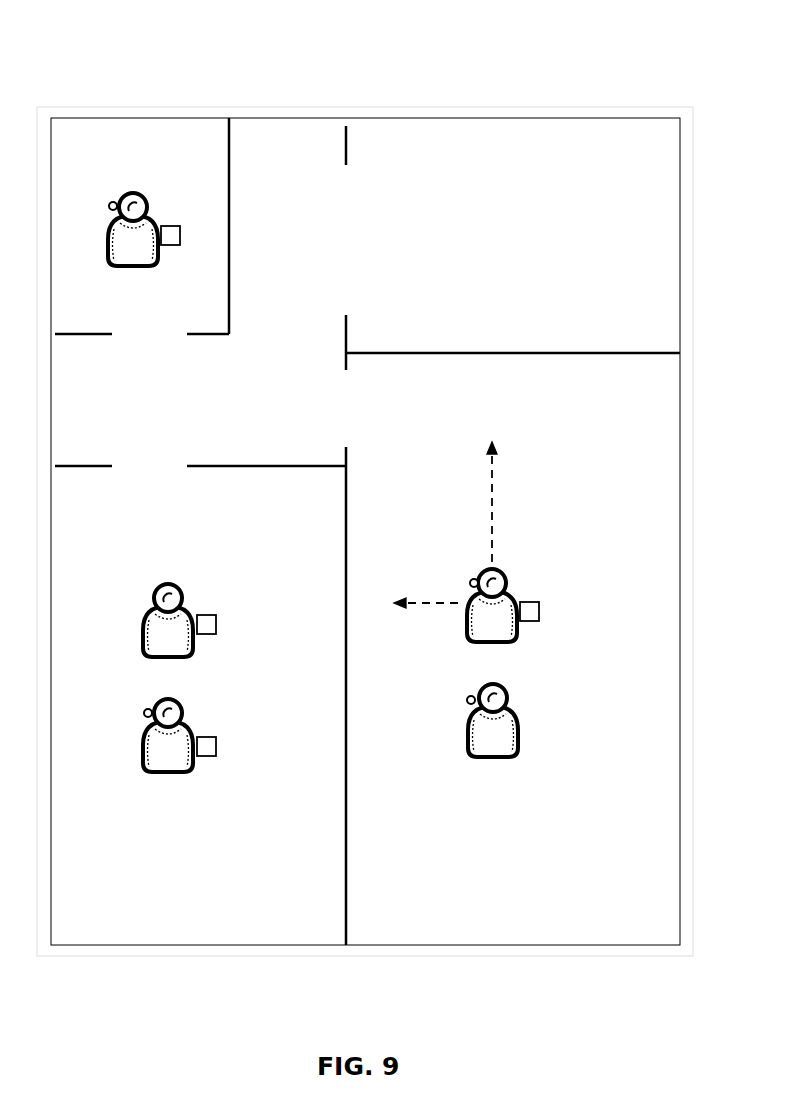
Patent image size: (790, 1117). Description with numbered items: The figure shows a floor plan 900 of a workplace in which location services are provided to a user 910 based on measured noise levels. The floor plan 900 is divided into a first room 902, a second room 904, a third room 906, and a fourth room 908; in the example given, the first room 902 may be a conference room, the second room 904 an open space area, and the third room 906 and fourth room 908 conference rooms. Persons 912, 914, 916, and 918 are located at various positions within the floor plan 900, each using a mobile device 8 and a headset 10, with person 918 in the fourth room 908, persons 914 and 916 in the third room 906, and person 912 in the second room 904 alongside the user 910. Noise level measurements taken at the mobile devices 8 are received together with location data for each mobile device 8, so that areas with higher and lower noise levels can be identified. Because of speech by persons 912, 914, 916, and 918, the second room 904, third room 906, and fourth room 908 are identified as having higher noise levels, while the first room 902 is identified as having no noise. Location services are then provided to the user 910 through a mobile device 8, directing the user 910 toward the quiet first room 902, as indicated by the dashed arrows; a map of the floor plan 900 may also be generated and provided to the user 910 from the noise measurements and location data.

The floor plan 900 is at (372, 37).
The first room 902 is at (513, 248).
The second room 904 is at (512, 696).
The third room 906 is at (200, 481).
The fourth room 908 is at (142, 226).
The user 910 is at (502, 573).
The person 912 is at (468, 743).
The person 914 is at (145, 755).
The person 916 is at (145, 640).
The person 918 is at (120, 255).
The mobile device 8 is at (172, 237).
The headset 10 is at (108, 203).